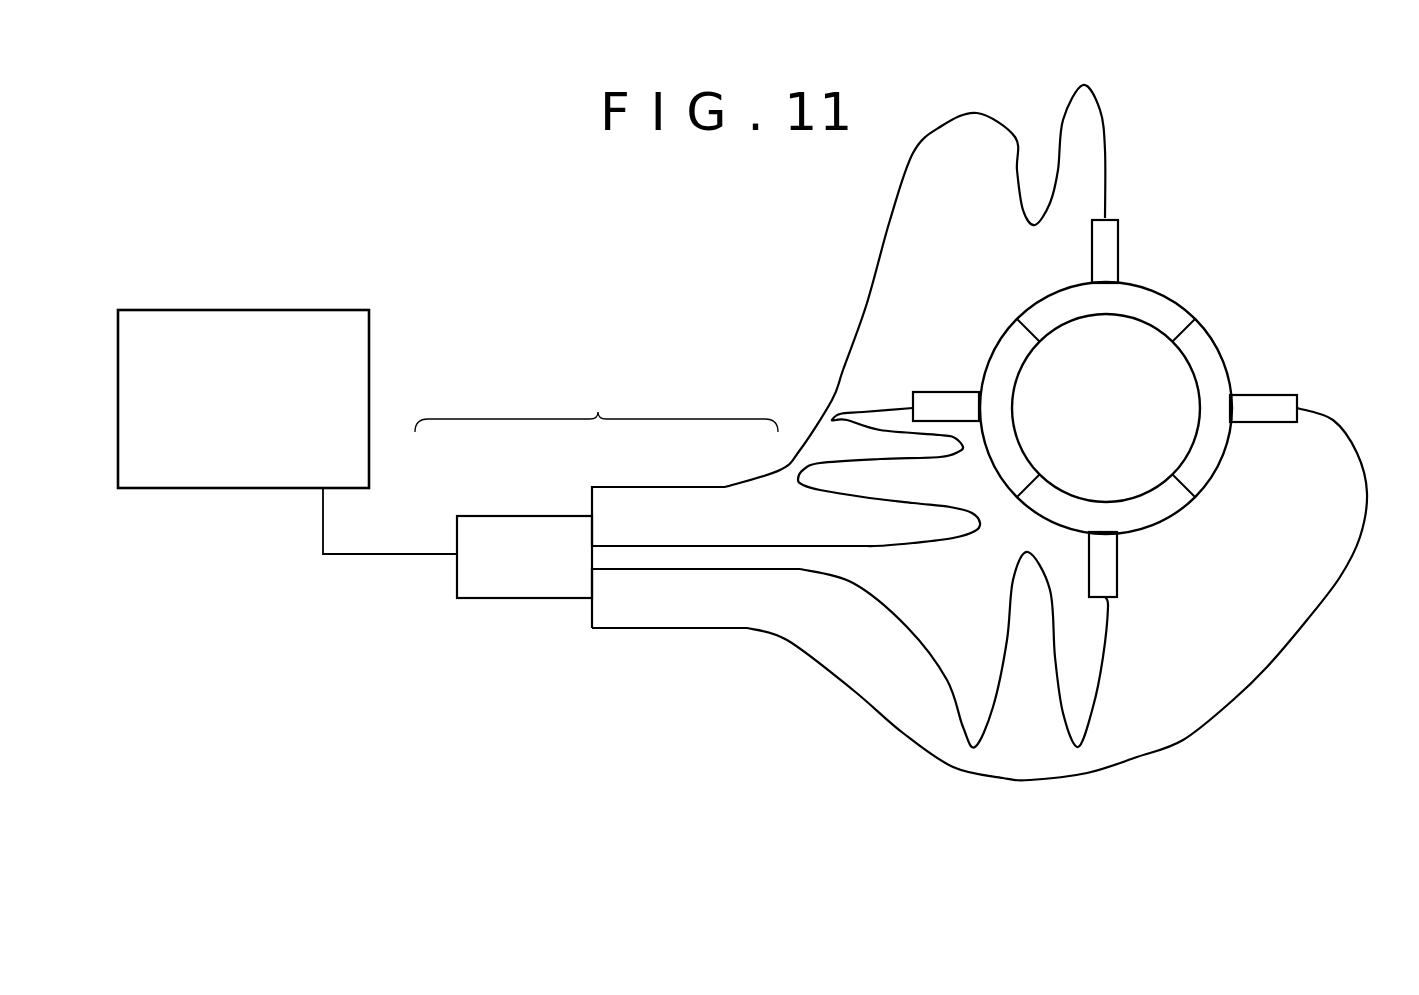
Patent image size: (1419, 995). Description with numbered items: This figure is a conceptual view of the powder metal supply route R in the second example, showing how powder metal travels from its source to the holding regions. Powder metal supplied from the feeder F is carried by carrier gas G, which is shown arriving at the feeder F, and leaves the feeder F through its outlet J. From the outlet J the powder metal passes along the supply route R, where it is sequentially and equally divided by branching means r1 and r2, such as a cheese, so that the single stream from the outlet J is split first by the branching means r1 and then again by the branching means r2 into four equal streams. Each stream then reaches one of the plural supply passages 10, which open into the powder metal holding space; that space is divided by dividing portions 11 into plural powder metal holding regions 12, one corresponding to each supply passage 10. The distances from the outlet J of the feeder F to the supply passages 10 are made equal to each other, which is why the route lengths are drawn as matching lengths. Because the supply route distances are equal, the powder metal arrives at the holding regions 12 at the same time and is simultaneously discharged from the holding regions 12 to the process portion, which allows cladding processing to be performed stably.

The supply passage 10 is at (1103, 253).
The dividing portion 11 is at (1188, 485).
The powder metal holding region 12 is at (1202, 345).
The feeder F is at (243, 399).
The carrier gas G is at (162, 296).
The outlet of the feeder J is at (316, 490).
The supply route R is at (596, 407).
The branching means r1 is at (455, 558).
The branching means r2 is at (592, 529).